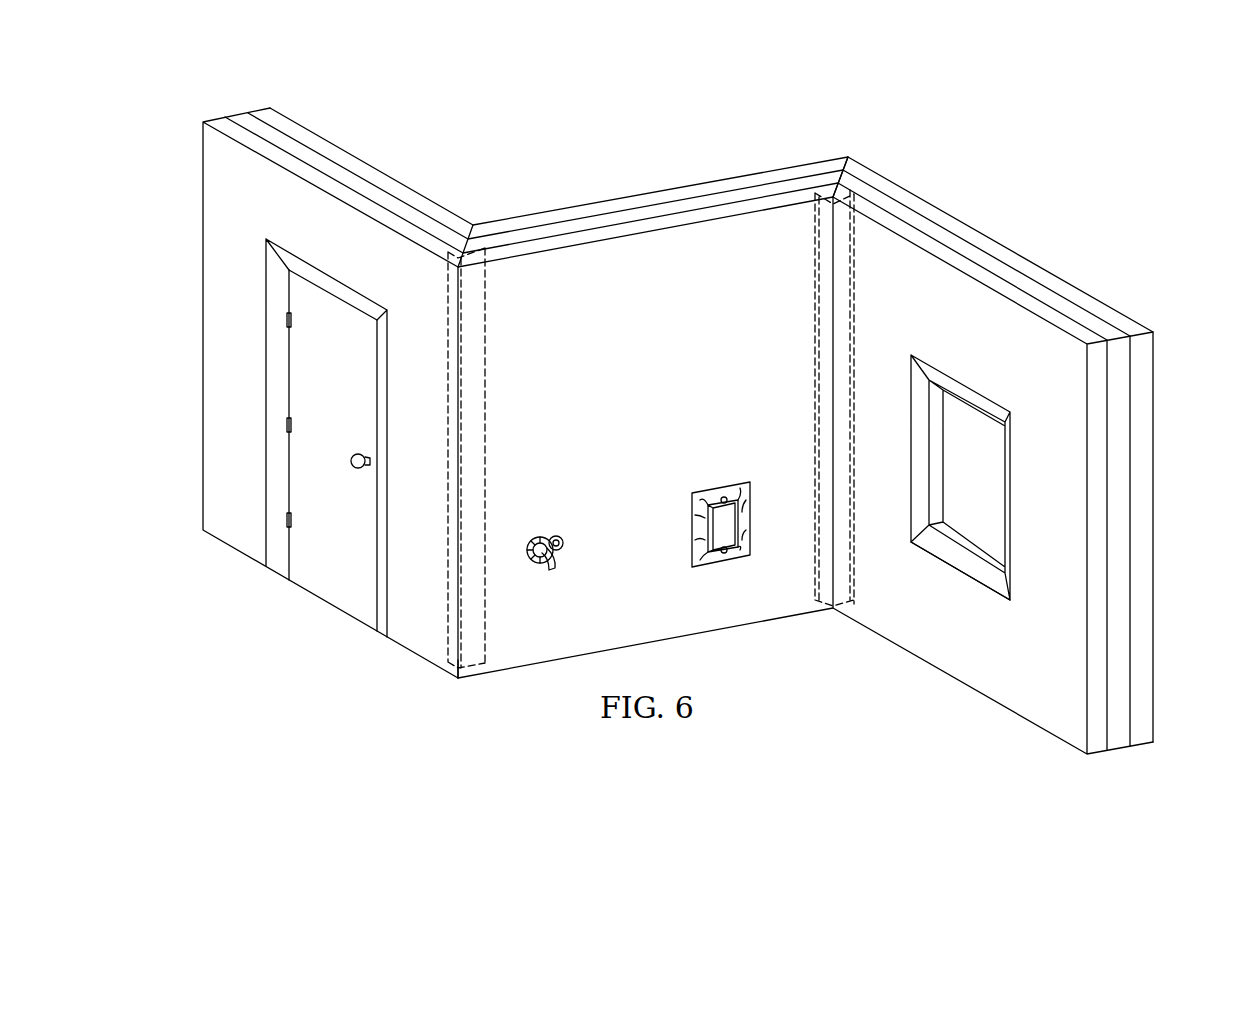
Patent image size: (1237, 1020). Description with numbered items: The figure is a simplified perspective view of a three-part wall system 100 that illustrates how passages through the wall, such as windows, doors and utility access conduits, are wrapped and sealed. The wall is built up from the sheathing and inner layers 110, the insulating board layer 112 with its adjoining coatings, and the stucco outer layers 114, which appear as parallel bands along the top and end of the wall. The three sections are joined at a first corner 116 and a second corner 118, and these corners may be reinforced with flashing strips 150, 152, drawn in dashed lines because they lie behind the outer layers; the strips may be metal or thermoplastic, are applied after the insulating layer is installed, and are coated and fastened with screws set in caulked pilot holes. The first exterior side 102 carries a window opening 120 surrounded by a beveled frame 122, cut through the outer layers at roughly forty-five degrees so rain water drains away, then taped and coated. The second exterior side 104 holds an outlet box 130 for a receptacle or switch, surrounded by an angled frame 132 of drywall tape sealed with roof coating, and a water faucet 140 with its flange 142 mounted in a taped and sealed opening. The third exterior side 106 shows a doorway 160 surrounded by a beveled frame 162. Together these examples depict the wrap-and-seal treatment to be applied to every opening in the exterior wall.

The wall system 100 is at (1097, 176).
The first exterior side 102 is at (945, 660).
The second exterior side 104 is at (748, 615).
The third exterior side 106 is at (236, 542).
The sheathing and inner layers 110 is at (305, 137).
The insulating board layer 112 is at (358, 187).
The stucco outer layers 114 is at (413, 233).
The first corner 116 is at (850, 157).
The second corner 118 is at (458, 678).
The window opening 120 is at (983, 437).
The beveled frame 122 is at (957, 553).
The outlet box 130 is at (735, 527).
The angled frame 132 is at (720, 493).
The water faucet 140 is at (560, 537).
The pipe flange 142 is at (542, 537).
The flashing strip 150 is at (858, 308).
The flashing strip 152 is at (488, 368).
The doorway 160 is at (336, 587).
The beveled frame 162 is at (277, 492).